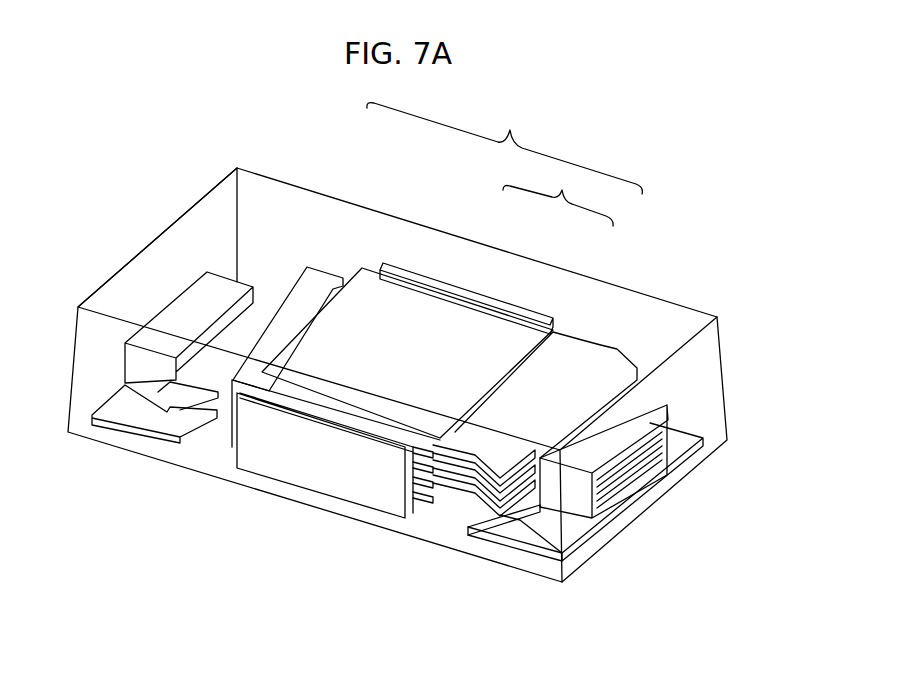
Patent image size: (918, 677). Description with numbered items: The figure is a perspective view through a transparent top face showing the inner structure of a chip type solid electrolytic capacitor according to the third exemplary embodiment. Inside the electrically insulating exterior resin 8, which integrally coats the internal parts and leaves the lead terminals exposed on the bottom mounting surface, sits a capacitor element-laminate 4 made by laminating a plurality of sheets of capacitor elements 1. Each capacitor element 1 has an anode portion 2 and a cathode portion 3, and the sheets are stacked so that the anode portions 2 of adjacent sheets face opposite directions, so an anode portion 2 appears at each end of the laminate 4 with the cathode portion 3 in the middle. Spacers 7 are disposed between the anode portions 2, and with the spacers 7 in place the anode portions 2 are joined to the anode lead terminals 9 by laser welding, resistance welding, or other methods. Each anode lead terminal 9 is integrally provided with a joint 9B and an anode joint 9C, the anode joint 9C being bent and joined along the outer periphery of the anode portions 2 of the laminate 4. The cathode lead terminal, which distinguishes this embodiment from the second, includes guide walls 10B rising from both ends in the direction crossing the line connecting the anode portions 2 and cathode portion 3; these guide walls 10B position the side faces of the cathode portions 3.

The capacitor element 1 is at (558, 194).
The anode portion 2 is at (318, 285).
The cathode portion 3 is at (445, 325).
The capacitor element-laminate 4 is at (505, 147).
The spacers 7 is at (642, 457).
The exterior resin 8 is at (697, 377).
The anode lead terminals 9 is at (160, 423).
The joint 9B is at (622, 508).
The anode joint 9C is at (190, 295).
The guide walls 10B is at (412, 272).